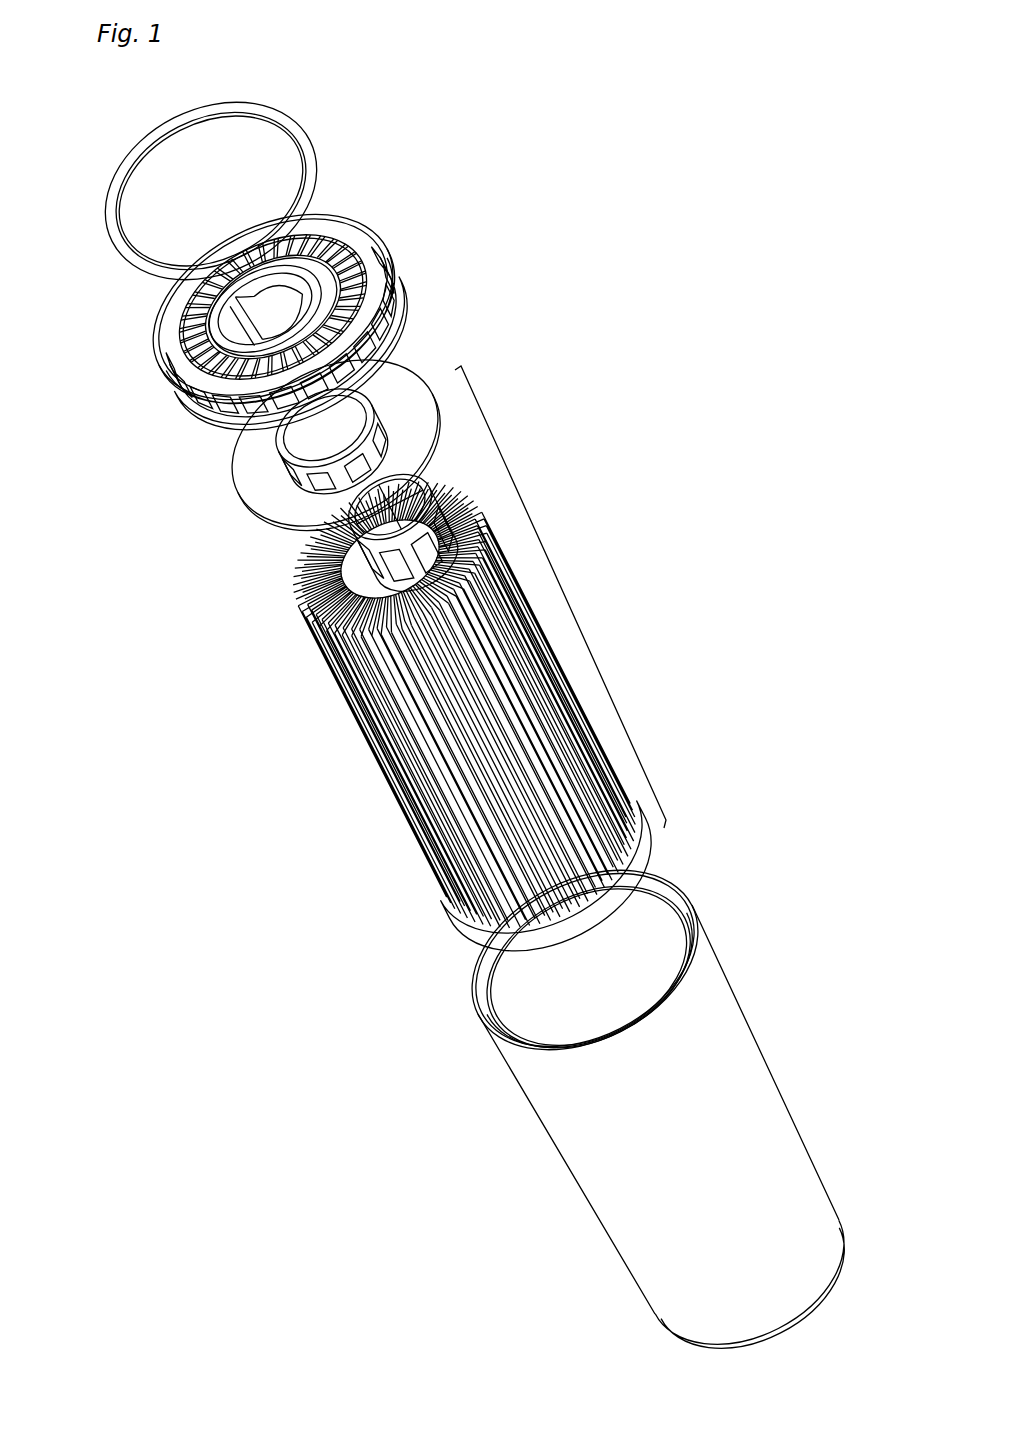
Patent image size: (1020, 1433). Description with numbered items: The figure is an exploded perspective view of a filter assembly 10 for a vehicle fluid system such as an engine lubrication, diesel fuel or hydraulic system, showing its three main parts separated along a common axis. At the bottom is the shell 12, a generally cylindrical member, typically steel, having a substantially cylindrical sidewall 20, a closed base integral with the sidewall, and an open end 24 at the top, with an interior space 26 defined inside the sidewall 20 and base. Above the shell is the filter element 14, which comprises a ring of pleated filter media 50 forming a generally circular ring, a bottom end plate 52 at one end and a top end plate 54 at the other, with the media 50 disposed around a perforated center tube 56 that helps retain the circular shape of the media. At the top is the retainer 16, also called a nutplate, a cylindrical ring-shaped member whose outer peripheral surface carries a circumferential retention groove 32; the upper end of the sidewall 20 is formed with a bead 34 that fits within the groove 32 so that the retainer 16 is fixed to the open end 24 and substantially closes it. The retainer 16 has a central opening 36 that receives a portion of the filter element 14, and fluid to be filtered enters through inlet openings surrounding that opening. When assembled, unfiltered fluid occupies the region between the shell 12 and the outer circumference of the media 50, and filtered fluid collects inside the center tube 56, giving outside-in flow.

The filter assembly 10 is at (662, 207).
The shell 12 is at (775, 1017).
The filter element 14 is at (558, 590).
The retainer 16 is at (390, 256).
The sidewall 20 is at (569, 1183).
The open end 24 is at (682, 909).
The interior space 26 is at (550, 1013).
The circumferential retention groove 32 is at (390, 307).
The bead 34 is at (475, 966).
The central opening 36 is at (290, 315).
The pleated filter media 50 is at (347, 703).
The bottom end plate 52 is at (443, 915).
The top end plate 54 is at (250, 466).
The perforated center tube 56 is at (335, 546).